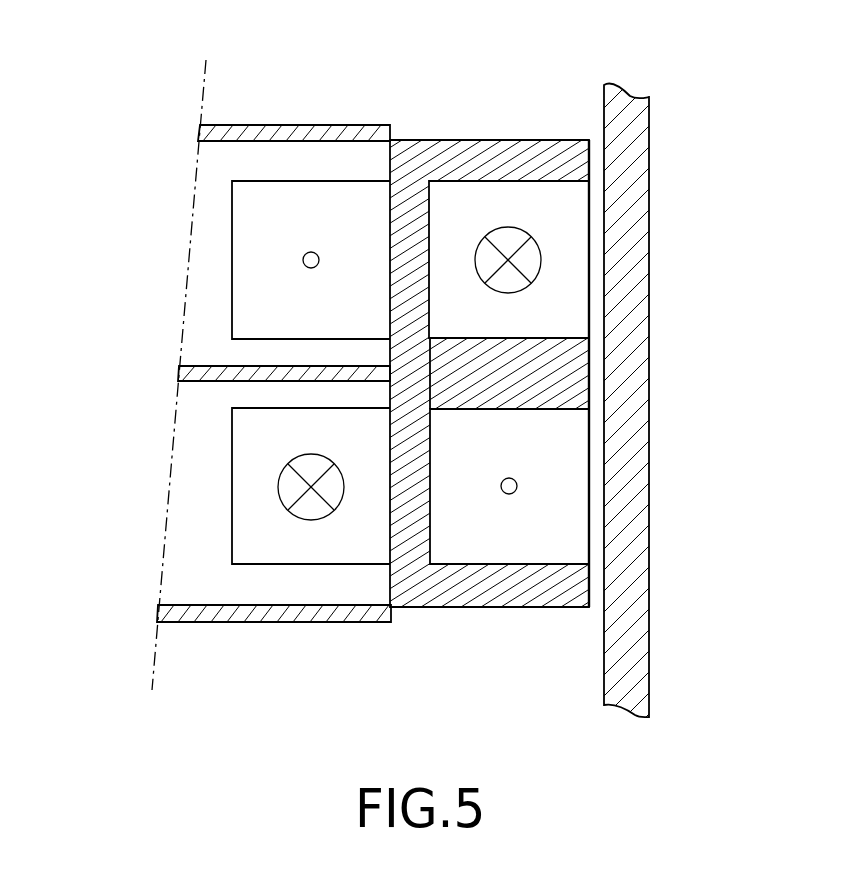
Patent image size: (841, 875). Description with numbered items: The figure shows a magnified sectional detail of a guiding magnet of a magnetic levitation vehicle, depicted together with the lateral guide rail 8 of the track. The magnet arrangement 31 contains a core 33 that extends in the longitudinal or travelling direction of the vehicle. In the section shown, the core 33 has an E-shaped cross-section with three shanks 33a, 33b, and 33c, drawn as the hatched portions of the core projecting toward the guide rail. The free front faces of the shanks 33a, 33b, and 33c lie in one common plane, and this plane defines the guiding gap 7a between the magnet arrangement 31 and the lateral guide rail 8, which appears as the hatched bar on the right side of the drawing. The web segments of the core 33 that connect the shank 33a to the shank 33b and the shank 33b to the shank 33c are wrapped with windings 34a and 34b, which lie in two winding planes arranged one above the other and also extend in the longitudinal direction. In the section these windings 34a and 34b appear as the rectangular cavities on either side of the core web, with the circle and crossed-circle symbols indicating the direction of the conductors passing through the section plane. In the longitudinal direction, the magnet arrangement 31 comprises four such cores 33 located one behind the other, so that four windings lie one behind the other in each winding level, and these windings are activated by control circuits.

The magnet arrangement 31 is at (104, 84).
The core 33 is at (443, 127).
The shank 33a is at (500, 150).
The shank 33b is at (547, 370).
The shank 33c is at (485, 585).
The guiding gap 7a is at (597, 595).
The lateral guide rail 8 is at (625, 253).
The winding 34a is at (248, 243).
The winding 34b is at (208, 576).